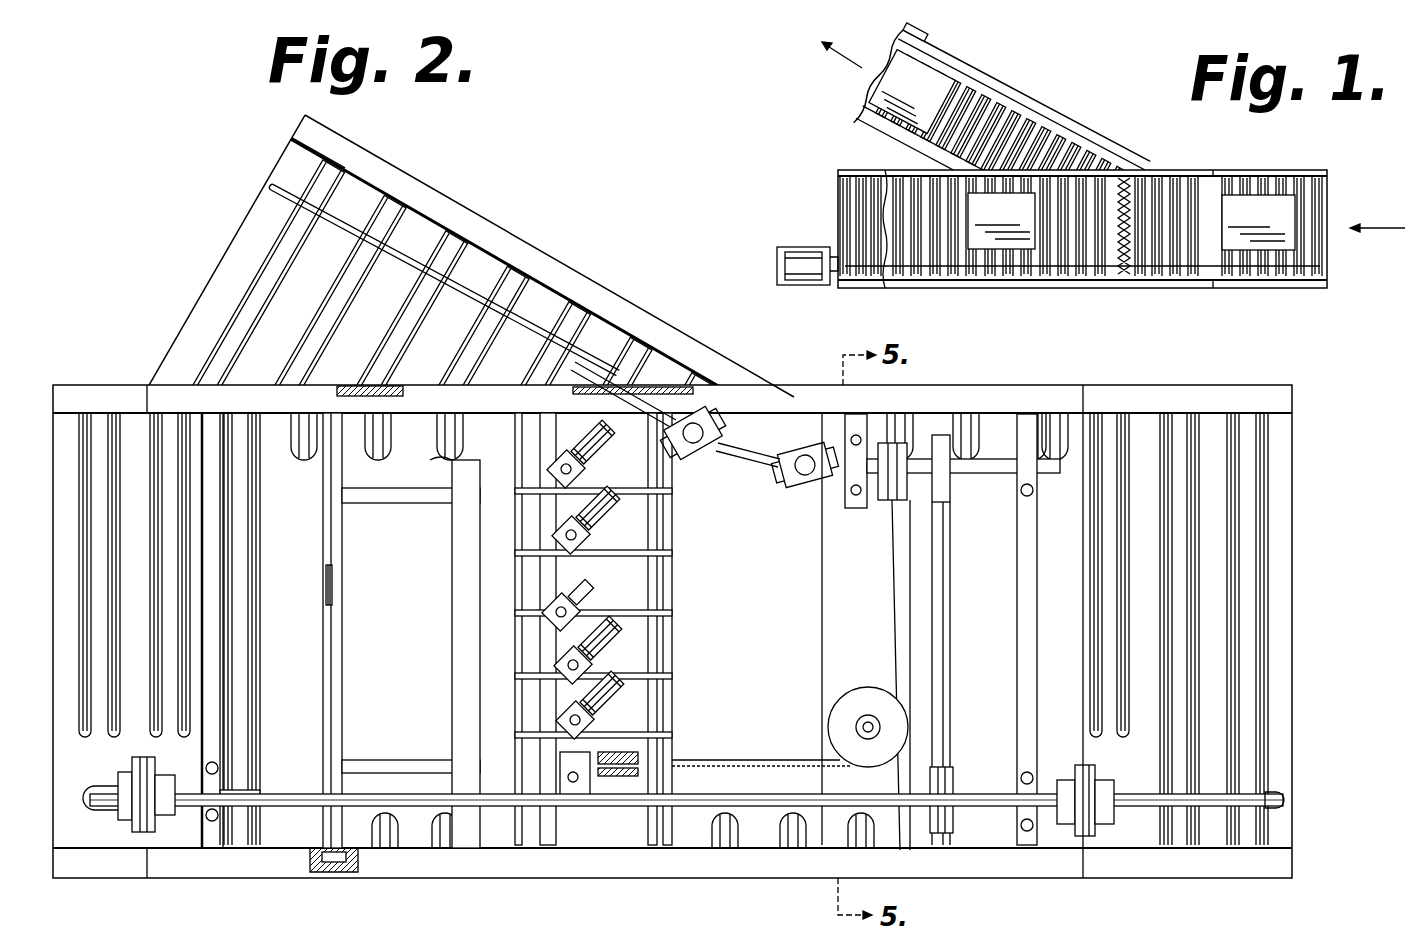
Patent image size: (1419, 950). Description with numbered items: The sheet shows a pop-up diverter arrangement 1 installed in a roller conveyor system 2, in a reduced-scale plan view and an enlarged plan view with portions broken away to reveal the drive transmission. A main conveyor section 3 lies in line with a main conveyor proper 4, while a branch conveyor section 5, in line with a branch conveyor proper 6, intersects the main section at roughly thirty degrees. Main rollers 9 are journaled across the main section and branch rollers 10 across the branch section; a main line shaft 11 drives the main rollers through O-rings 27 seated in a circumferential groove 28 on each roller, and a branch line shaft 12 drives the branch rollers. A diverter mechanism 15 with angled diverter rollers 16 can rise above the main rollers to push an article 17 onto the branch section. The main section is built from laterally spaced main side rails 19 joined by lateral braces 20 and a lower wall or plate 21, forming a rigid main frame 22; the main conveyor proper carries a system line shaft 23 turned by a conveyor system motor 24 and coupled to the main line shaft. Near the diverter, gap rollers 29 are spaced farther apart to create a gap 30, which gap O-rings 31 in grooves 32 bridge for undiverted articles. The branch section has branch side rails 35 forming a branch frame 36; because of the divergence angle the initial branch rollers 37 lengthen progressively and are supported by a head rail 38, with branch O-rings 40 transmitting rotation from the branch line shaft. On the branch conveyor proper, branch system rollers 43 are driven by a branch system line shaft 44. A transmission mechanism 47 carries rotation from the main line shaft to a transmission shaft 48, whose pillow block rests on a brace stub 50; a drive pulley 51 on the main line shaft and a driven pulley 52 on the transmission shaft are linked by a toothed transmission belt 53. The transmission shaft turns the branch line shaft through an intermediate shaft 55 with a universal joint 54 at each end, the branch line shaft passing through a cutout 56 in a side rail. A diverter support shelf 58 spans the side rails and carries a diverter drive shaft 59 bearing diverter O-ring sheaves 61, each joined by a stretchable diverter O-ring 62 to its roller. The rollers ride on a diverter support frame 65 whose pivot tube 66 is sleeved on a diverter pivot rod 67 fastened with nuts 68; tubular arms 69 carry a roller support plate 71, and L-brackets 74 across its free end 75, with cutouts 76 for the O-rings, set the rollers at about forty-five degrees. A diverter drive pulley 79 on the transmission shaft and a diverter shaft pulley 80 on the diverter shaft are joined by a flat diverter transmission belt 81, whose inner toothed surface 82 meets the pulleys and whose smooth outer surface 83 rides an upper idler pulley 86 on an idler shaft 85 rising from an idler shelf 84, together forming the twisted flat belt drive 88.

In FIG. 2, the pop-up diverter arrangement 1 is at (714, 333).
In FIG. 1, the pop-up diverter arrangement 1 is at (1068, 302).
In FIG. 1, the roller conveyor system 2 is at (792, 130).
In FIG. 2, the main conveyor section 3 is at (507, 877).
In FIG. 1, the main conveyor section 3 is at (1077, 287).
In FIG. 2, the main conveyor proper 4 is at (88, 885).
In FIG. 1, the main conveyor proper 4 is at (893, 286).
In FIG. 2, the branch conveyor section 5 is at (635, 301).
In FIG. 1, the branch conveyor section 5 is at (1057, 108).
In FIG. 1, the branch conveyor proper 6 is at (940, 48).
In FIG. 2, the main rollers 9 is at (266, 452).
In FIG. 1, the main rollers 9 is at (1012, 286).
In FIG. 2, the branch rollers 10 is at (522, 236).
In FIG. 1, the branch rollers 10 is at (1076, 123).
In FIG. 2, the main line shaft 11 is at (277, 788).
In FIG. 1, the main line shaft 11 is at (1077, 284).
In FIG. 2, the branch line shaft 12 is at (550, 295).
In FIG. 1, the branch line shaft 12 is at (1108, 150).
In FIG. 2, the diverter mechanism 15 is at (590, 808).
In FIG. 1, the diverter mechanism 15 is at (1128, 285).
In FIG. 2, the diverter rollers 16 is at (600, 523).
In FIG. 1, the diverter rollers 16 is at (1134, 170).
In FIG. 1, the article 17 is at (1082, 150).
In FIG. 2, the main side rails 19 is at (976, 386).
In FIG. 2, the lateral braces 20 is at (200, 604).
In FIG. 2, the lower wall or plate 21 is at (536, 672).
In FIG. 2, the main conveyor section frame 22 is at (700, 870).
In FIG. 1, the main conveyor section frame 22 is at (1123, 290).
In FIG. 2, the system line shaft 23 is at (96, 796).
In FIG. 1, the system line shaft 23 is at (949, 285).
In FIG. 1, the conveyor system motor 24 is at (810, 247).
In FIG. 2, the O-rings 27 is at (258, 824).
In FIG. 2, the circumferential groove 28 is at (244, 790).
In FIG. 2, the gap rollers 29 is at (496, 573).
In FIG. 2, the gap 30 is at (644, 598).
In FIG. 2, the gap O-rings 31 is at (525, 636).
In FIG. 2, the grooves 32 is at (525, 700).
In FIG. 2, the branch side rails 35 is at (393, 158).
In FIG. 1, the branch side rails 35 is at (991, 71).
In FIG. 2, the branch conveyor section frame 36 is at (455, 173).
In FIG. 1, the branch conveyor section frame 36 is at (1040, 64).
In FIG. 2, the initial branch rollers 37 is at (270, 279).
In FIG. 2, the head rail 38 is at (332, 382).
In FIG. 2, the branch O-rings 40 is at (310, 180).
In FIG. 1, the branch system rollers 43 is at (912, 34).
In FIG. 1, the branch system line shaft 44 is at (963, 40).
In FIG. 2, the transmission mechanism 47 is at (842, 520).
In FIG. 2, the transmission shaft 48 is at (969, 479).
In FIG. 2, the brace stub 50 is at (866, 508).
In FIG. 2, the drive pulley 51 is at (955, 770).
In FIG. 2, the driven pulley 52 is at (947, 503).
In FIG. 2, the transmission belt 53 is at (940, 587).
In FIG. 2, the universal joint 54 is at (696, 450).
In FIG. 2, the intermediate shaft 55 is at (748, 463).
In FIG. 2, the cutout 56 is at (735, 383).
In FIG. 2, the diverter support shelf 58 is at (451, 462).
In FIG. 2, the diverter drive shaft 59 is at (664, 578).
In FIG. 2, the diverter O-ring sheaves 61 is at (620, 563).
In FIG. 2, the diverter O-ring 62 is at (585, 430).
In FIG. 2, the diverter support frame 65 is at (486, 526).
In FIG. 2, the pivot tube 66 is at (340, 648).
In FIG. 2, the diverter pivot rod 67 is at (338, 586).
In FIG. 2, the nuts 68 is at (347, 874).
In FIG. 2, the tubular arms 69 is at (348, 504).
In FIG. 2, the roller support plate 71 is at (478, 545).
In FIG. 2, the L-brackets 74 is at (552, 464).
In FIG. 2, the free end 75 is at (636, 590).
In FIG. 2, the cutouts 76 is at (524, 566).
In FIG. 2, the diverter drive pulley 79 is at (878, 502).
In FIG. 2, the diverter shaft pulley 80 is at (612, 790).
In FIG. 2, the diverter transmission belt 81 is at (704, 754).
In FIG. 2, the inner toothed surface 82 is at (834, 765).
In FIG. 2, the smooth outer surface 83 is at (750, 760).
In FIG. 2, the idler shelf 84 is at (823, 660).
In FIG. 2, the idler shaft 85 is at (865, 726).
In FIG. 2, the upper idler pulley 86 is at (849, 688).
In FIG. 2, the twisted flat belt drive 88 is at (820, 696).